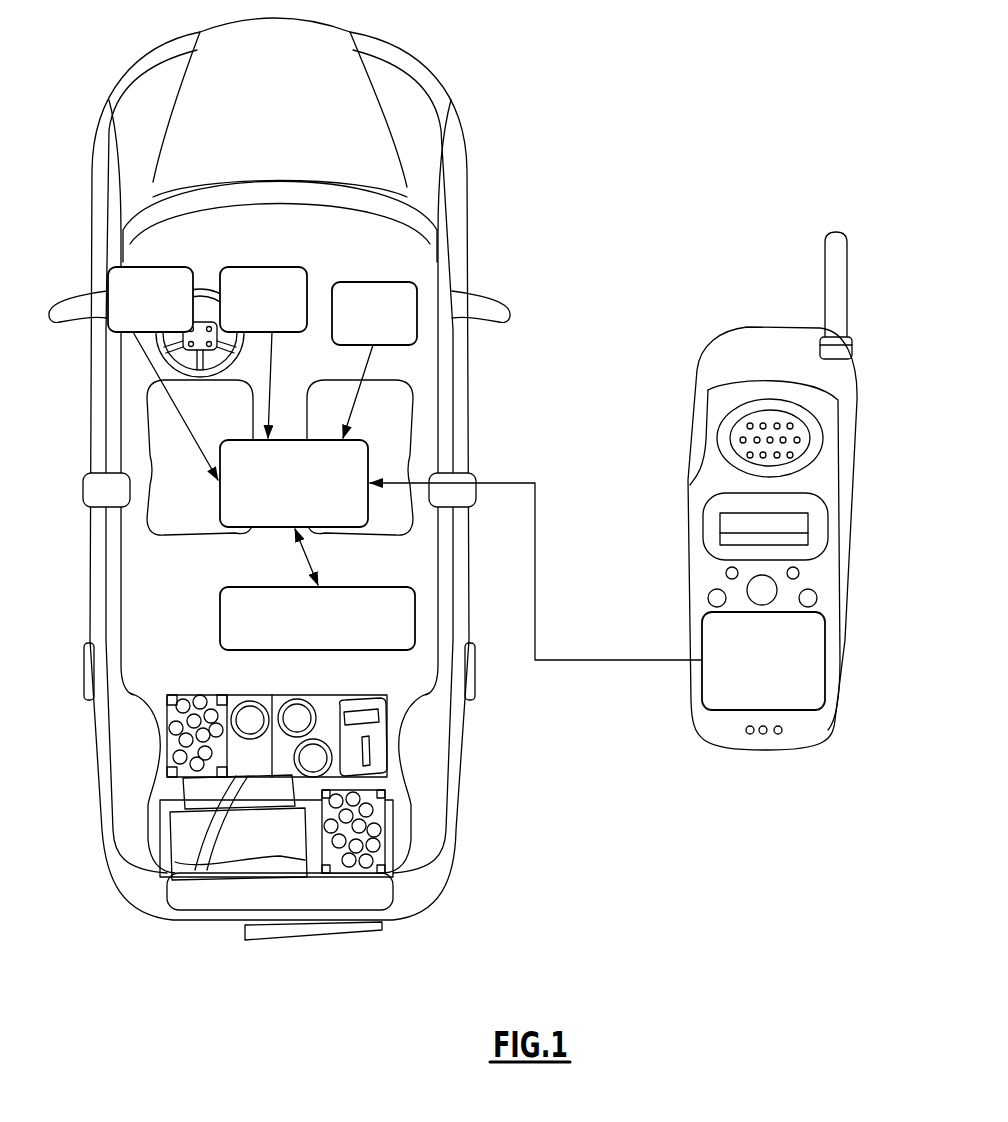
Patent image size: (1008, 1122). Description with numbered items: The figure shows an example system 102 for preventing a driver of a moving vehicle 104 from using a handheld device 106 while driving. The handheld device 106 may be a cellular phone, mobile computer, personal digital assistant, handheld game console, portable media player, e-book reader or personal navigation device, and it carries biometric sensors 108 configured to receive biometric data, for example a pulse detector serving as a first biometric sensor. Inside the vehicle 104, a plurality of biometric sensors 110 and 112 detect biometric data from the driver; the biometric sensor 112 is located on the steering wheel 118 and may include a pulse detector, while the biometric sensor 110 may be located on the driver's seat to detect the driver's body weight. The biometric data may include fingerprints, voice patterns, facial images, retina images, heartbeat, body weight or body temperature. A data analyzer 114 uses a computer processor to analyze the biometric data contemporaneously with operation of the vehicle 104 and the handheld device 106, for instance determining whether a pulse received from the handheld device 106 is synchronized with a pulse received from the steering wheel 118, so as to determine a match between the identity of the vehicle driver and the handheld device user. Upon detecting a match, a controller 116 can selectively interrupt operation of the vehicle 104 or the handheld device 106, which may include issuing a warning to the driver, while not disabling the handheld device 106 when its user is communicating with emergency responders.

The system 102 is at (453, 479).
The vehicle 104 is at (375, 479).
The handheld device 106 is at (727, 491).
The biometric sensors 108 is at (702, 636).
The biometric sensor 110 is at (380, 281).
The biometric sensor 112 is at (258, 267).
The data analyzer 114 is at (218, 513).
The controller 116 is at (220, 617).
The steering wheel 118 is at (198, 377).